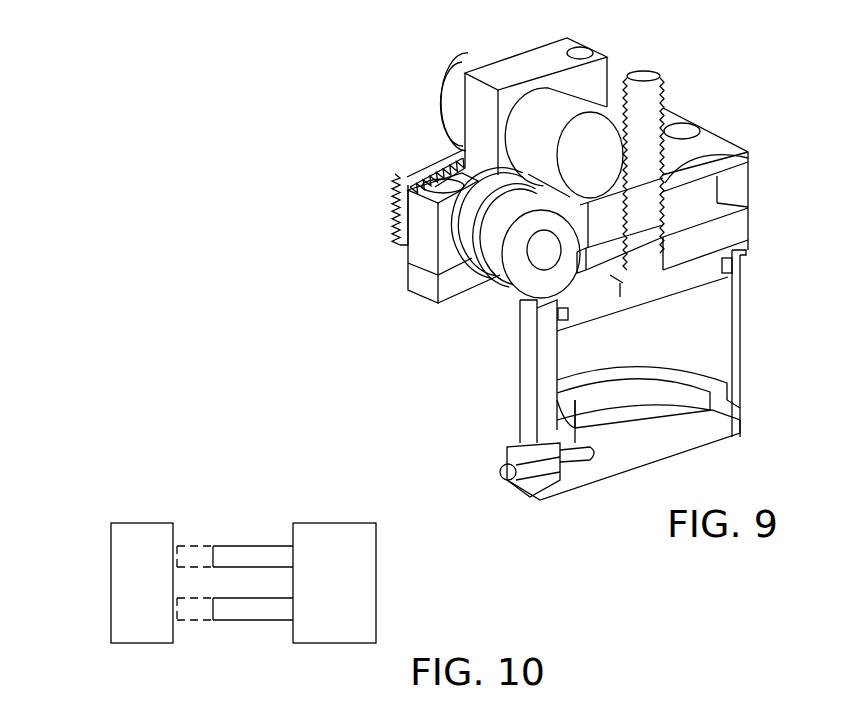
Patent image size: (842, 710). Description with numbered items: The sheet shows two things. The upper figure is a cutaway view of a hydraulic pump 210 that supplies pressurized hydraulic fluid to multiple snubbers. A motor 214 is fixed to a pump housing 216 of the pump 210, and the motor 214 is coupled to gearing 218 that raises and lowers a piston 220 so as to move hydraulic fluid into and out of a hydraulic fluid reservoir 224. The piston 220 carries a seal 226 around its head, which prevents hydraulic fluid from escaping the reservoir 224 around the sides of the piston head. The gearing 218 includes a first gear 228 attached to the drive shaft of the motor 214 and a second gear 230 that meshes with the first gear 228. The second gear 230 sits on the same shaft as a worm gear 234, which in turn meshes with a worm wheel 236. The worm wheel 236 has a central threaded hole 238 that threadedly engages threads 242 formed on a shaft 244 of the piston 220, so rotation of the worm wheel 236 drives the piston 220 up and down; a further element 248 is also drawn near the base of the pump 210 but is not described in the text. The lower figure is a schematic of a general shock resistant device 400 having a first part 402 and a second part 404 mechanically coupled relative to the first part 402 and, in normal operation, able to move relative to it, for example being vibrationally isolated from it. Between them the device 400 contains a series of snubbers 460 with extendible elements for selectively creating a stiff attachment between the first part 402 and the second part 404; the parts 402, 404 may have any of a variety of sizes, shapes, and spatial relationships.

In FIG. 9, the hydraulic pump 210 is at (338, 156).
In FIG. 9, the motor 214 is at (560, 112).
In FIG. 9, the pump housing 216 is at (725, 397).
In FIG. 9, the gearing 218 is at (391, 175).
In FIG. 9, the piston 220 is at (690, 278).
In FIG. 9, the hydraulic fluid reservoir 224 is at (683, 328).
In FIG. 9, the seal 226 is at (730, 267).
In FIG. 9, the first gear 228 is at (463, 117).
In FIG. 9, the second gear 230 is at (397, 218).
In FIG. 9, the worm gear 234 is at (495, 268).
In FIG. 9, the worm wheel 236 is at (697, 200).
In FIG. 9, the central threaded hole 238 is at (749, 160).
In FIG. 9, the threads 242 is at (663, 108).
In FIG. 9, the shaft 244 is at (645, 97).
In FIG. 9, the gearbox 248 is at (503, 470).
In FIG. 10, the shock resistant device 400 is at (160, 488).
In FIG. 10, the first part 402 is at (114, 568).
In FIG. 10, the second part 404 is at (335, 537).
In FIG. 10, the snubbers 460 is at (255, 550).